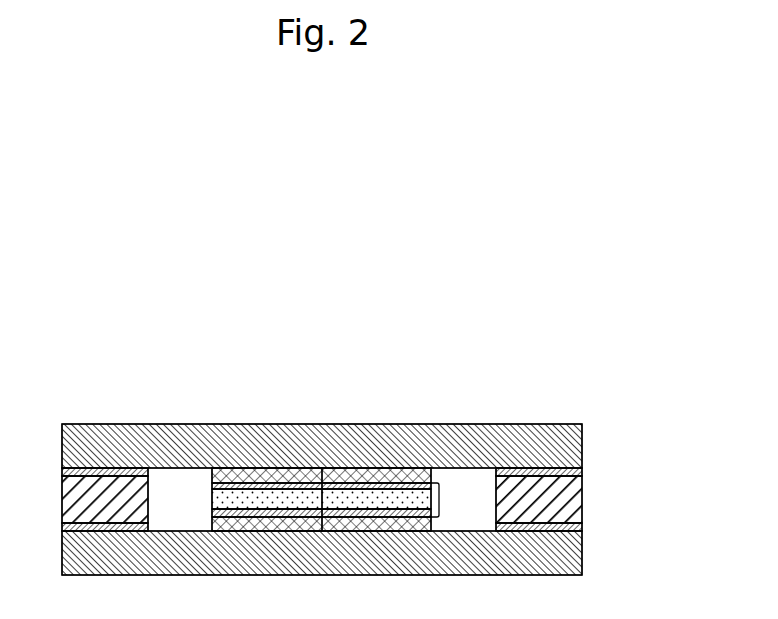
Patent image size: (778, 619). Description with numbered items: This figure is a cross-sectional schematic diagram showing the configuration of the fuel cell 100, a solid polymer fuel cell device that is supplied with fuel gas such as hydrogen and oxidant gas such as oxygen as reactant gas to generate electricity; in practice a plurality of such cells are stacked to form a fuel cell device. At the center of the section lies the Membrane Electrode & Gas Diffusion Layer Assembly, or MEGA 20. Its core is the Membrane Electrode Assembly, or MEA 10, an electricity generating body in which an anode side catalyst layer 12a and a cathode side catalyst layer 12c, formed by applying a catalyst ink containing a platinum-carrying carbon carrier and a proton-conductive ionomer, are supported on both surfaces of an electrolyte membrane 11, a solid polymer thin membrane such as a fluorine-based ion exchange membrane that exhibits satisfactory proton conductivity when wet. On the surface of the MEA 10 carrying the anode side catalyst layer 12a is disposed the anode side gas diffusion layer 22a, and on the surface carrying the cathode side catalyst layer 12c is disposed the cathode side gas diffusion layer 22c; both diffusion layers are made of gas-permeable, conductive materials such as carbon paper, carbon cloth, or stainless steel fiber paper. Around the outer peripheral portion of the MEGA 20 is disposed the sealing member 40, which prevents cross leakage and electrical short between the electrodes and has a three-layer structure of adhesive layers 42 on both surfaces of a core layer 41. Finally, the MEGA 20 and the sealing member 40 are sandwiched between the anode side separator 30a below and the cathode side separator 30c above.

The fuel cell 100 is at (593, 301).
The Membrane Electrode Assembly (MEA) 10 is at (439, 500).
The electrolyte membrane 11 is at (213, 493).
The anode side catalyst layer 12a is at (213, 510).
The cathode side catalyst layer 12c is at (213, 482).
The Membrane Electrode & Gas Diffusion Layer Assembly (MEGA) 20 is at (345, 429).
The anode side gas diffusion layer 22a is at (432, 523).
The cathode side gas diffusion layer 22c is at (439, 483).
The anode side separator 30a is at (582, 556).
The cathode side separator 30c is at (582, 440).
The sealing member 40 is at (350, 503).
The core layer 41 is at (582, 497).
The adhesive layer 42 is at (582, 471).